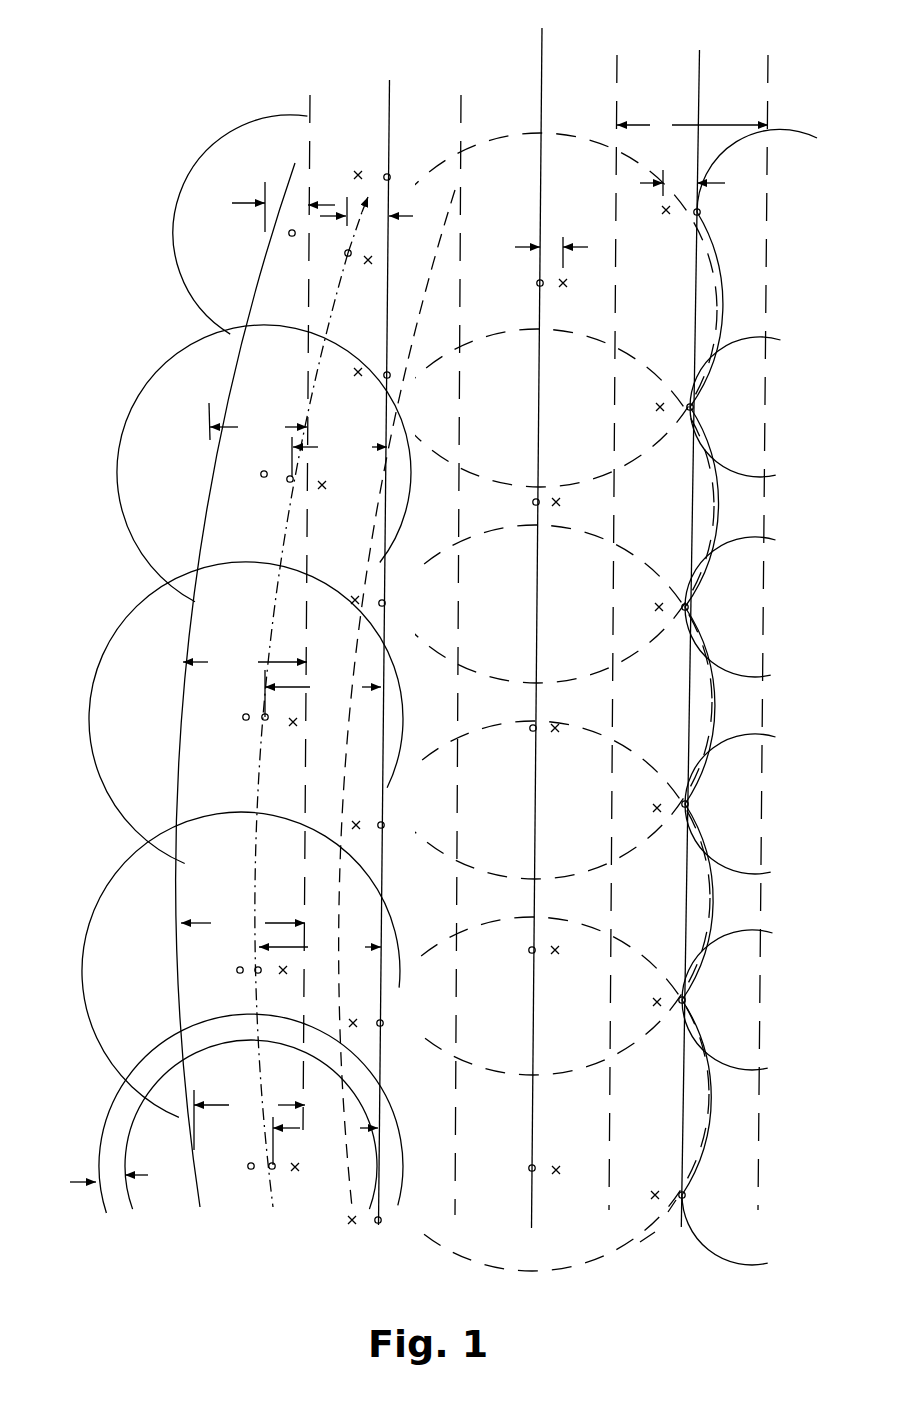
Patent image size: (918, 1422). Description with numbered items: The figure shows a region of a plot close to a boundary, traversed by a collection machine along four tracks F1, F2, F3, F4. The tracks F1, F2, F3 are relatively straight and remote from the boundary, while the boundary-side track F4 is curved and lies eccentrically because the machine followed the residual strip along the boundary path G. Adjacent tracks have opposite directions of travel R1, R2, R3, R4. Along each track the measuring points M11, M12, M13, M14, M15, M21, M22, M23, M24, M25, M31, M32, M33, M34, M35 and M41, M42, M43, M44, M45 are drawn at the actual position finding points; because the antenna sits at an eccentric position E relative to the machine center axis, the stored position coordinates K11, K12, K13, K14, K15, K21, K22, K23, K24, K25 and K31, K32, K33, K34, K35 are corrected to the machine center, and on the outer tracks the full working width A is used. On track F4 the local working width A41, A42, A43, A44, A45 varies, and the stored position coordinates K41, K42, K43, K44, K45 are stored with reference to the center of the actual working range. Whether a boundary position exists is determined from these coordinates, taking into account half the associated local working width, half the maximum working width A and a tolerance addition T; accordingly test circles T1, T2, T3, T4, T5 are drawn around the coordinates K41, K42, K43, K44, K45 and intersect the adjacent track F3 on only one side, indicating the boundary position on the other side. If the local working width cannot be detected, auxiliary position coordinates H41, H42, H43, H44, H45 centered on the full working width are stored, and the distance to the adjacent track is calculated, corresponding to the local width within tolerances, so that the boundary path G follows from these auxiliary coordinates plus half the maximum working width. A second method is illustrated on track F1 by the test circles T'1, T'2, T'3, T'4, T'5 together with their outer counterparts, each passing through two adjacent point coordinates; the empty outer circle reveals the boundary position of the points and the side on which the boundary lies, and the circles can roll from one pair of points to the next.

The direction of travel R1 is at (699, 5).
The direction of travel R2 is at (542, 3).
The direction of travel R3 is at (390, 7).
The direction of travel R4 is at (388, 150).
The track F1 is at (768, 82).
The track F2 is at (615, 90).
The track F3 is at (460, 100).
The track F4 is at (410, 337).
The boundary path G is at (256, 267).
The maximum working width A is at (692, 125).
The eccentric position E is at (620, 219).
The tolerance addition T is at (218, 1124).
The test circle T1 is at (193, 303).
The test circle T2 is at (160, 378).
The test circle T3 is at (138, 604).
The test circle T4 is at (122, 868).
The test circle T5 is at (108, 1112).
The test circle T'1 is at (677, 273).
The test circle T'2 is at (667, 507).
The test circle T'3 is at (660, 705).
The test circle T'4 is at (712, 902).
The test circle T'5 is at (722, 1097).
The stored position coordinate K11 is at (701, 212).
The stored position coordinate K12 is at (694, 408).
The stored position coordinate K13 is at (689, 608).
The stored position coordinate K14 is at (689, 805).
The stored position coordinate K15 is at (686, 1001).
The measuring point M11 is at (647, 210).
The measuring point M12 is at (645, 394).
The measuring point M13 is at (643, 595).
The measuring point M14 is at (652, 795).
The measuring point M15 is at (645, 988).
The stored position coordinate K21 is at (518, 282).
The stored position coordinate K22 is at (509, 501).
The stored position coordinate K23 is at (506, 727).
The stored position coordinate K24 is at (506, 949).
The stored position coordinate K25 is at (508, 1167).
The measuring point M21 is at (584, 282).
The measuring point M22 is at (579, 501).
The measuring point M23 is at (577, 727).
The measuring point M24 is at (577, 949).
The measuring point M25 is at (562, 1156).
The stored position coordinate K31 is at (391, 177).
The stored position coordinate K32 is at (391, 375).
The stored position coordinate K33 is at (403, 605).
The stored position coordinate K34 is at (402, 825).
The stored position coordinate K35 is at (402, 1025).
The measuring point M31 is at (361, 166).
The measuring point M32 is at (353, 362).
The measuring point M33 is at (336, 589).
The measuring point M34 is at (355, 812).
The measuring point M35 is at (361, 1011).
The stored position coordinate K41 is at (293, 237).
The stored position coordinate K42 is at (264, 478).
The stored position coordinate K43 is at (246, 721).
The stored position coordinate K44 is at (241, 967).
The stored position coordinate K45 is at (251, 1163).
The auxiliary position coordinate H41 is at (348, 257).
The auxiliary position coordinate H42 is at (290, 482).
The auxiliary position coordinate H43 is at (265, 721).
The auxiliary position coordinate H44 is at (258, 974).
The auxiliary position coordinate H45 is at (271, 1170).
The measuring point M41 is at (374, 259).
The measuring point M42 is at (323, 491).
The measuring point M43 is at (290, 736).
The measuring point M44 is at (289, 983).
The measuring point M45 is at (307, 1180).
The local working width A41 is at (280, 193).
The local working width A42 is at (258, 421).
The local working width A43 is at (245, 663).
The local working width A44 is at (243, 923).
The local working width A45 is at (249, 1120).